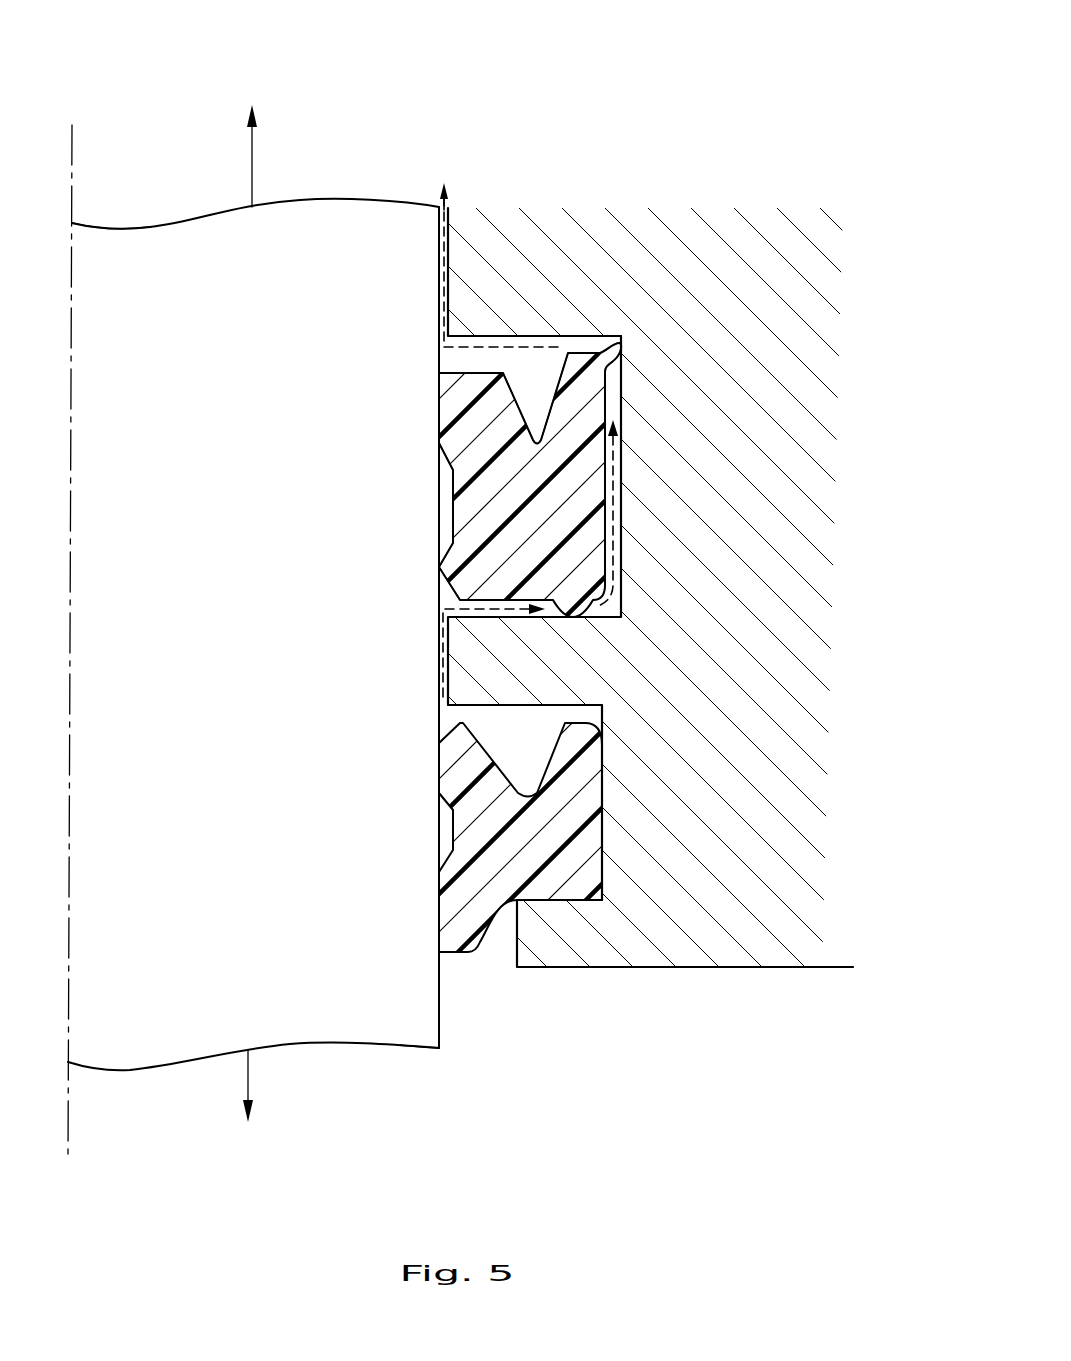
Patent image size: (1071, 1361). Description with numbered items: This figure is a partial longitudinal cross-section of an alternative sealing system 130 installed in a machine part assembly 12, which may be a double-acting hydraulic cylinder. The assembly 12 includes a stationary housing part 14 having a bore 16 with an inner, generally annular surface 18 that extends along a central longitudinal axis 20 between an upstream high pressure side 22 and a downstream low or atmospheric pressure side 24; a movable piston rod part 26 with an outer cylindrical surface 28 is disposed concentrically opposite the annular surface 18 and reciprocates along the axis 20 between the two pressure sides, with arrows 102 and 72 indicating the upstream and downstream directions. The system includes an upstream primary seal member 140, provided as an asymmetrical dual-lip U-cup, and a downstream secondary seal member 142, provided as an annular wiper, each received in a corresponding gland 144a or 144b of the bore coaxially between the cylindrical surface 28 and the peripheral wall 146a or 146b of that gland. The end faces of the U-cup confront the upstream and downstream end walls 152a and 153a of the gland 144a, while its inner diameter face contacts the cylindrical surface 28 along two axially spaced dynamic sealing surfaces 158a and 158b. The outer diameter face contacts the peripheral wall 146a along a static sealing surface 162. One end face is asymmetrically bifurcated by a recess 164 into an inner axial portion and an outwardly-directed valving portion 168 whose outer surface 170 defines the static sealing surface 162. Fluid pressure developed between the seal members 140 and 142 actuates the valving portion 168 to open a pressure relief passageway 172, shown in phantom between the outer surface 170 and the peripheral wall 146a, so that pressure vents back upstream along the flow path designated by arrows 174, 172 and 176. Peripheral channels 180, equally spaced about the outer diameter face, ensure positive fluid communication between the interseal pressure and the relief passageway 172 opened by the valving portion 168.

The machine part assembly 12 is at (418, 90).
The sealing system 130 is at (733, 76).
The stationary housing part 14 is at (833, 207).
The bore 16 is at (145, 1104).
The inner annular surface 18 is at (517, 950).
The central longitudinal axis 20 is at (68, 1132).
The upstream high pressure side 22 is at (163, 152).
The downstream low pressure side 24 is at (173, 1142).
The movable piston rod part 26 is at (107, 227).
The outer cylindrical surface 28 is at (440, 1043).
The low pressure side direction 72 is at (248, 1083).
The high pressure side direction 102 is at (253, 185).
The primary seal member 140 is at (439, 366).
The secondary seal member 142 is at (439, 762).
The gland 144a is at (622, 597).
The gland 144b is at (604, 863).
The peripheral wall 146a is at (623, 362).
The peripheral wall 146b is at (604, 747).
The upstream end wall 152a is at (580, 352).
The downstream end wall 153a is at (598, 615).
The dynamic sealing surface 158a is at (439, 428).
The dynamic sealing surface 158b is at (439, 565).
The static sealing surface 162 is at (621, 419).
The recess 164 is at (520, 373).
The valving portion 168 is at (607, 338).
The outer surface 170 is at (623, 387).
The pressure relief passageway 172 is at (622, 470).
The fluid flow path arrow 174 is at (439, 672).
The fluid flow path arrow 176 is at (445, 286).
The peripheral channel 180 is at (632, 536).